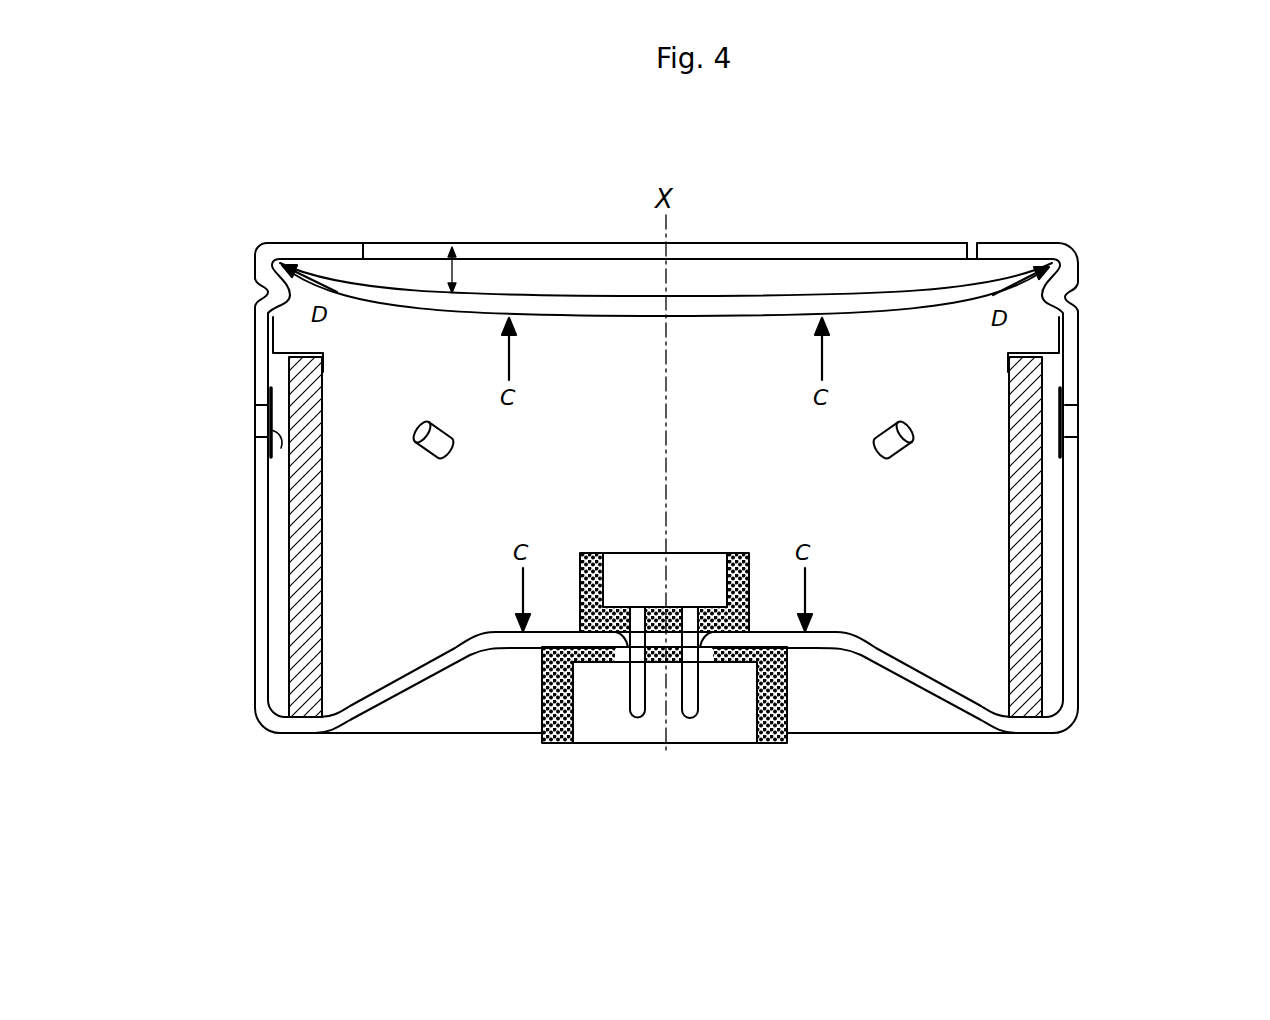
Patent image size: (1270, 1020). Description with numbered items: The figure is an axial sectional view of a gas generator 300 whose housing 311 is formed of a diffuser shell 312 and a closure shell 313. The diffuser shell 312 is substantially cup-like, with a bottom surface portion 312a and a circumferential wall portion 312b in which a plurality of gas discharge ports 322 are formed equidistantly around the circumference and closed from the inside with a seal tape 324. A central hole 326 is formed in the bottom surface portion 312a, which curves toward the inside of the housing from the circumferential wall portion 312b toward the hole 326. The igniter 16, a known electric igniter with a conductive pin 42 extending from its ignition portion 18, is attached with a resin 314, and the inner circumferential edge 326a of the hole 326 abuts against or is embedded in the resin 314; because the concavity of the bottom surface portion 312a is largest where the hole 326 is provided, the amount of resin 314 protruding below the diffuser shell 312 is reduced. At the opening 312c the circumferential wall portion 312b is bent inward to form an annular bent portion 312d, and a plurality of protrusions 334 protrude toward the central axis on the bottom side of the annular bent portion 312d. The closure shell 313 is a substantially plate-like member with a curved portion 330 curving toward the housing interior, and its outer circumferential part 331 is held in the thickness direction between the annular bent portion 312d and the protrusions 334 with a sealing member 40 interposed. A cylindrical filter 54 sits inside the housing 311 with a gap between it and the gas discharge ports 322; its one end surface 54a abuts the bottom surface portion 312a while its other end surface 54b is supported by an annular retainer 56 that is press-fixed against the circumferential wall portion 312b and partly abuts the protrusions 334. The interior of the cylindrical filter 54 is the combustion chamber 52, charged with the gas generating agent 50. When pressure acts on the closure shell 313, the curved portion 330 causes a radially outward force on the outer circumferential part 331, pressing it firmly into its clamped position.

The gas generator 300 is at (822, 226).
The housing 311 is at (1163, 198).
The diffuser shell 312 is at (1079, 332).
The closure shell 313 is at (985, 270).
The bottom surface portion 312a is at (850, 655).
The circumferential wall portion 312b is at (256, 575).
The opening 312c is at (540, 245).
The annular bent portion 312d is at (313, 243).
The resin 314 is at (590, 556).
The igniter 16 is at (690, 546).
The ignition portion 18 is at (652, 594).
The conductive pins 42 is at (750, 568).
The hole 326 is at (703, 650).
The inner circumferential edge 326a is at (628, 650).
The curved portion 330 is at (580, 316).
The outer circumferential part 331 is at (268, 258).
The protrusions 334 is at (275, 312).
The sealing member 40 is at (1050, 268).
The gas generating agent 50 is at (886, 450).
The combustion chamber 52 is at (394, 516).
The cylindrical filter 54 is at (1032, 568).
The one end surface 54a is at (303, 718).
The other end surface 54b is at (276, 340).
The annular retainer 56 is at (318, 344).
The gas discharge ports 322 is at (256, 420).
The seal tape 324 is at (282, 440).